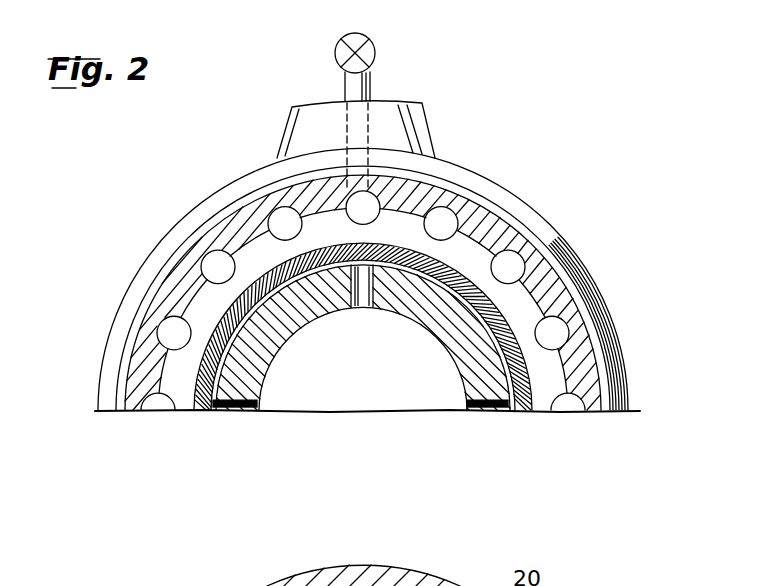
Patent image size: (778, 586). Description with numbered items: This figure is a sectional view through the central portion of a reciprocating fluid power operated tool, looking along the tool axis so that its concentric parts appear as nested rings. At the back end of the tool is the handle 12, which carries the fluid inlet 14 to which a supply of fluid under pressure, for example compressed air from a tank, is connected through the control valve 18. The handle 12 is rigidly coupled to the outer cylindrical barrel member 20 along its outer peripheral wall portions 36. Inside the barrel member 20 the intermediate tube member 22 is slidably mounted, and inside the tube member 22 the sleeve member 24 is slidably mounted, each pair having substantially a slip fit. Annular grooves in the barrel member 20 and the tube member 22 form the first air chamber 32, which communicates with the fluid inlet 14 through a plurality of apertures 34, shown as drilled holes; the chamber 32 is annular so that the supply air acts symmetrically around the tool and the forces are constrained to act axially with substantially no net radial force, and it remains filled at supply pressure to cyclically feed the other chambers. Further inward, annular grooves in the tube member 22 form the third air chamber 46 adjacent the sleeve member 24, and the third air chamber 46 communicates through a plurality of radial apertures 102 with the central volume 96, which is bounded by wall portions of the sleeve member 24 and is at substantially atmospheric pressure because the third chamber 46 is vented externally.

The handle 12 is at (523, 203).
The fluid inlet 14 is at (370, 117).
The control valve 18 is at (370, 40).
The outer cylindrical barrel member 20 is at (530, 240).
The intermediate tube member 22 is at (512, 322).
The sleeve member 24 is at (535, 373).
The first air chamber 32 is at (341, 238).
The apertures 34 is at (214, 248).
The outer peripheral wall portions 36 is at (572, 258).
The third air chamber 46 is at (440, 333).
The volume 96 is at (373, 382).
The radial apertures 102 is at (356, 304).